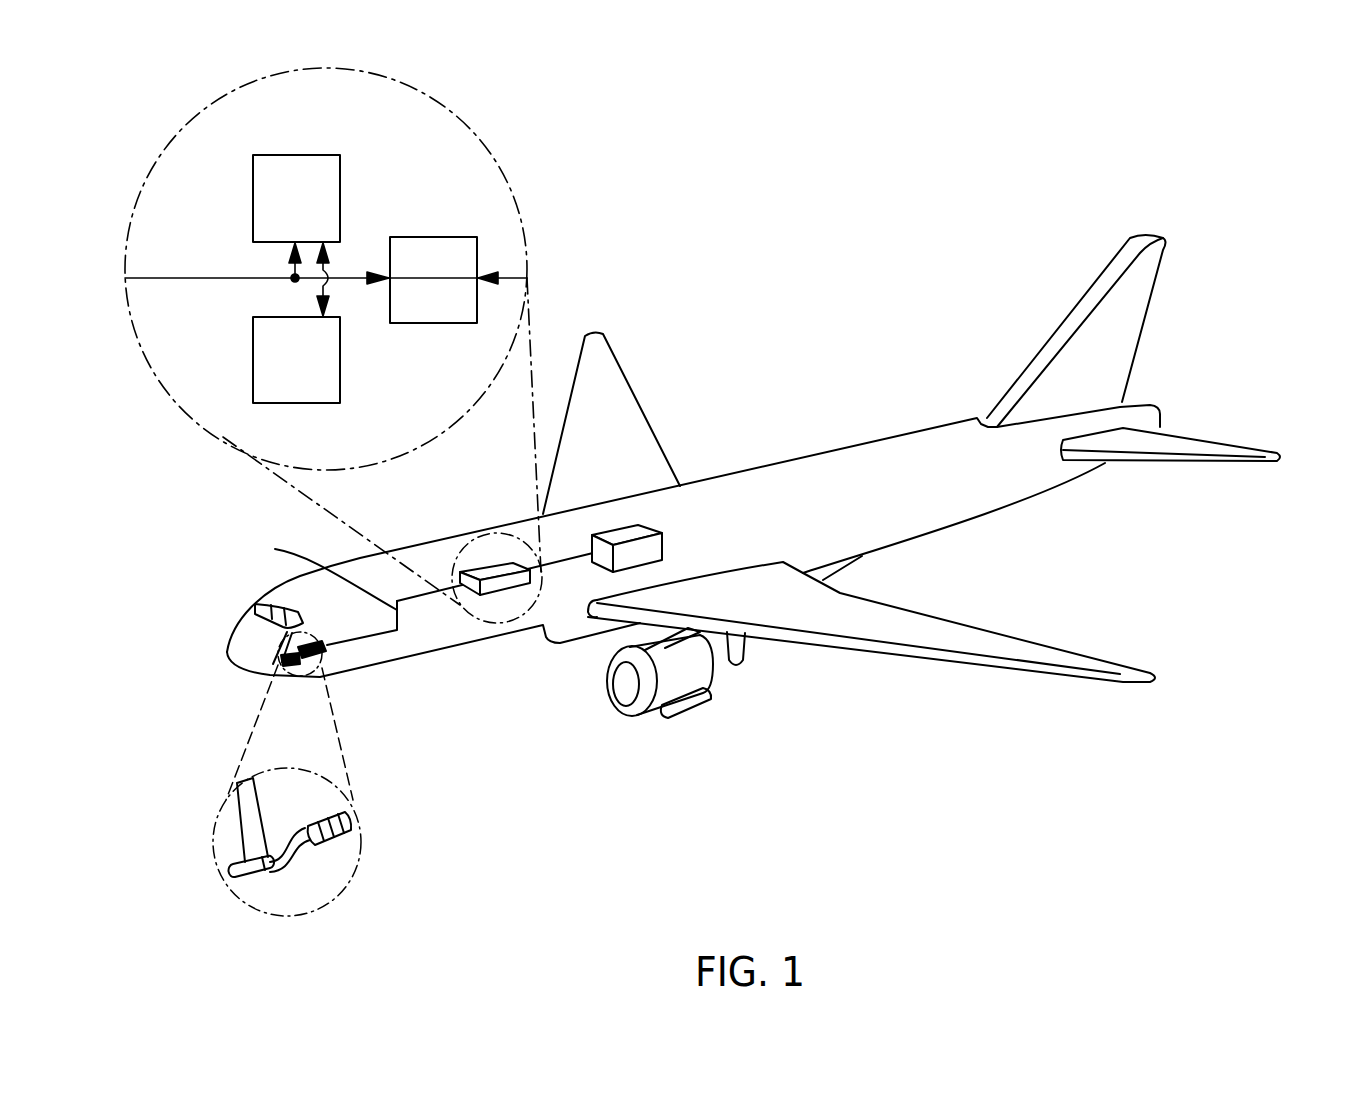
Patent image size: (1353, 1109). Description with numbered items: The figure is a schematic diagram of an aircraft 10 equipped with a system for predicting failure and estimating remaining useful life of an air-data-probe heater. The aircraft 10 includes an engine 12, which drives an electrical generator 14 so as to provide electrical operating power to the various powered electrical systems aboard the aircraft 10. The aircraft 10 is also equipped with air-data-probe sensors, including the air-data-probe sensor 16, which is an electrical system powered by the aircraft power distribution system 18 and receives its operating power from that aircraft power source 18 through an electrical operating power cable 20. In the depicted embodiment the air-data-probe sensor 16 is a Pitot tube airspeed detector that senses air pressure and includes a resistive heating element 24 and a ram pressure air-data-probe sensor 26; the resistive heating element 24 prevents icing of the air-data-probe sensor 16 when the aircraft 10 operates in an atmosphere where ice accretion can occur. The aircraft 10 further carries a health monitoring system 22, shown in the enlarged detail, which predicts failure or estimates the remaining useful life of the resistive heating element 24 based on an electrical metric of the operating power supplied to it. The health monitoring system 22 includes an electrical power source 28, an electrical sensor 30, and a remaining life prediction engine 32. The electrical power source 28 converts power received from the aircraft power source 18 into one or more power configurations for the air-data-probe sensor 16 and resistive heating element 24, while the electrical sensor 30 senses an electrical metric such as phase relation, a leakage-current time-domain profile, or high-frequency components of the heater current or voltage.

The aircraft 10 is at (893, 433).
The engine 12 is at (620, 706).
The electrical generator 14 is at (672, 714).
The air-data-probe sensor 16 is at (323, 664).
The aircraft power distribution system 18 is at (628, 525).
The electrical operating power cable 20 is at (389, 567).
The health monitoring system 22 is at (505, 625).
The resistive heating element 24 is at (258, 882).
The ram pressure air-data-probe sensor 26 is at (320, 847).
The electrical power source 28 is at (420, 296).
The electrical sensor 30 is at (284, 212).
The remaining life prediction engine 32 is at (284, 375).